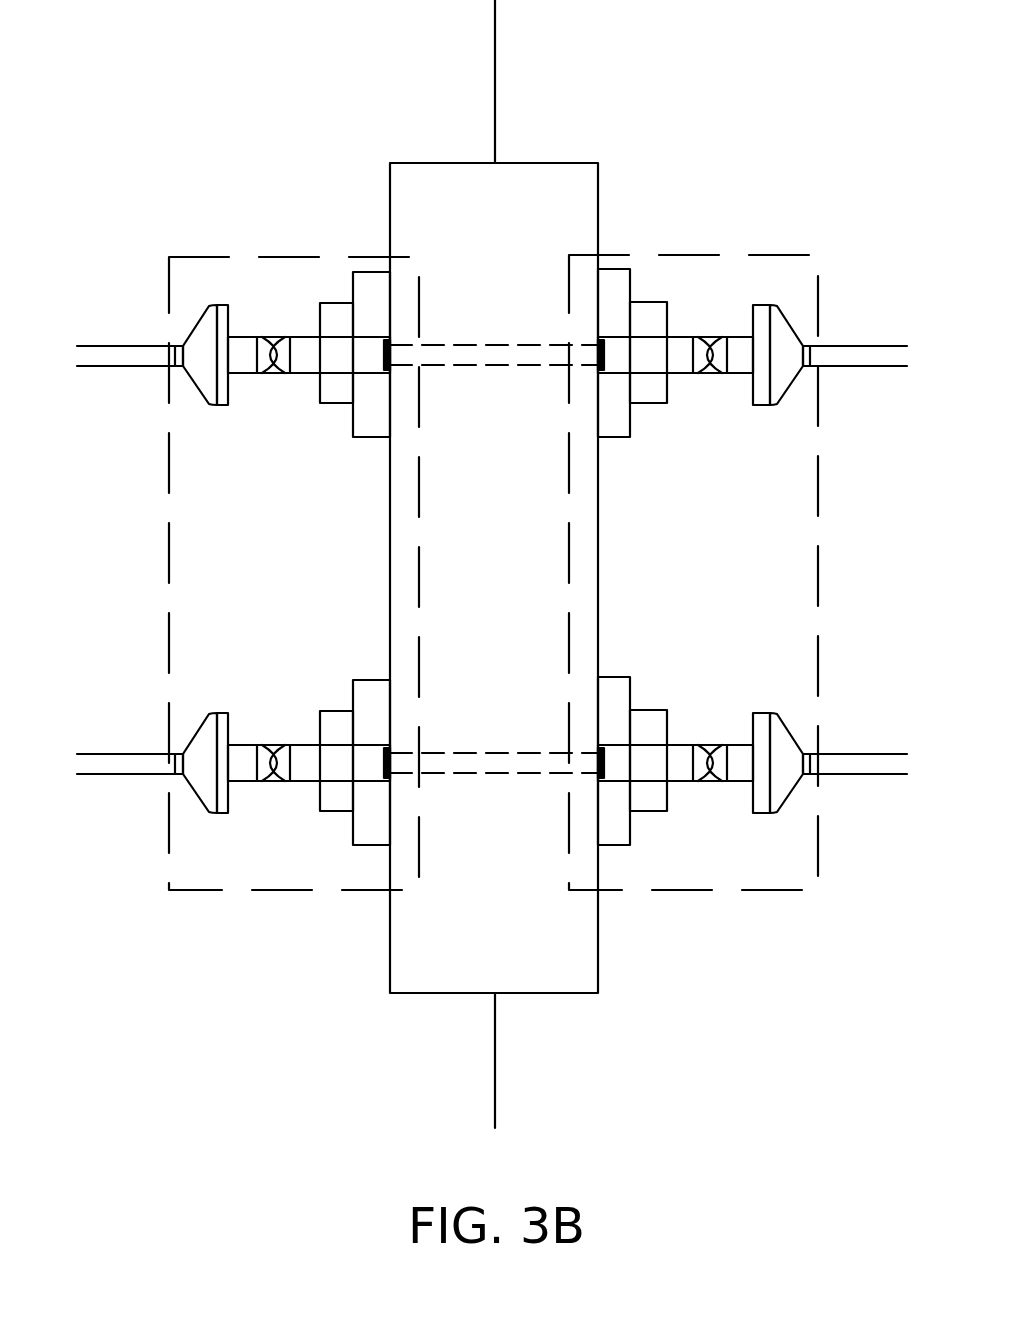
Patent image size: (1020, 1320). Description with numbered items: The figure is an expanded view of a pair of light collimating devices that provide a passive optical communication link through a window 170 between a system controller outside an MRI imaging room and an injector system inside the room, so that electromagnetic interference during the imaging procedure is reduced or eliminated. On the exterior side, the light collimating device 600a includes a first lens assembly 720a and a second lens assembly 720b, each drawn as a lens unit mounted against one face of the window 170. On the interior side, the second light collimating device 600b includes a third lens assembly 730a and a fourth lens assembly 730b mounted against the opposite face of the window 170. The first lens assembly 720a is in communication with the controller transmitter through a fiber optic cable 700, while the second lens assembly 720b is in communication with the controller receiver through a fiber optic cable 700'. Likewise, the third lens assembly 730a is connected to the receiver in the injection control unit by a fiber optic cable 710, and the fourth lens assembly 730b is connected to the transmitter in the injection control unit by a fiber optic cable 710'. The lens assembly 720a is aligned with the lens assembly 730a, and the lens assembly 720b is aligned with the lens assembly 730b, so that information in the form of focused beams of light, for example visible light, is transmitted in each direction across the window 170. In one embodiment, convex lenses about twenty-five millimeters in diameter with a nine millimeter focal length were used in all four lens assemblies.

The window 170 is at (568, 956).
The light collimating device 600a is at (300, 248).
The second light collimating device 600b is at (692, 247).
The fiber optic cable 700 is at (151, 343).
The fiber optic cable 700' is at (149, 778).
The fiber optic cable 710 is at (830, 340).
The fiber optic cable 710' is at (838, 771).
The first lens assembly 720a is at (245, 332).
The second lens assembly 720b is at (300, 738).
The third lens assembly 730a is at (698, 328).
The fourth lens assembly 730b is at (700, 738).